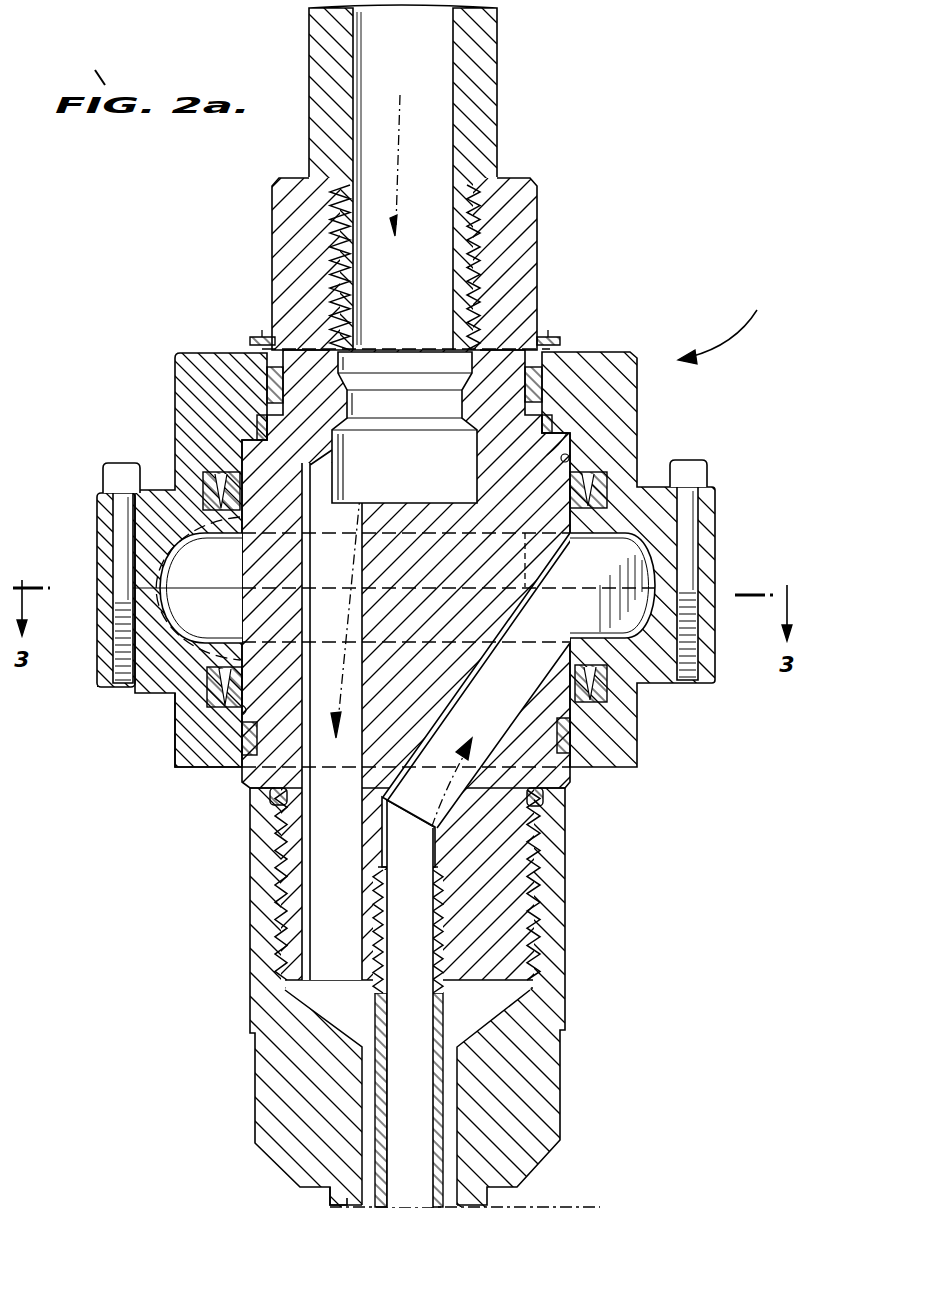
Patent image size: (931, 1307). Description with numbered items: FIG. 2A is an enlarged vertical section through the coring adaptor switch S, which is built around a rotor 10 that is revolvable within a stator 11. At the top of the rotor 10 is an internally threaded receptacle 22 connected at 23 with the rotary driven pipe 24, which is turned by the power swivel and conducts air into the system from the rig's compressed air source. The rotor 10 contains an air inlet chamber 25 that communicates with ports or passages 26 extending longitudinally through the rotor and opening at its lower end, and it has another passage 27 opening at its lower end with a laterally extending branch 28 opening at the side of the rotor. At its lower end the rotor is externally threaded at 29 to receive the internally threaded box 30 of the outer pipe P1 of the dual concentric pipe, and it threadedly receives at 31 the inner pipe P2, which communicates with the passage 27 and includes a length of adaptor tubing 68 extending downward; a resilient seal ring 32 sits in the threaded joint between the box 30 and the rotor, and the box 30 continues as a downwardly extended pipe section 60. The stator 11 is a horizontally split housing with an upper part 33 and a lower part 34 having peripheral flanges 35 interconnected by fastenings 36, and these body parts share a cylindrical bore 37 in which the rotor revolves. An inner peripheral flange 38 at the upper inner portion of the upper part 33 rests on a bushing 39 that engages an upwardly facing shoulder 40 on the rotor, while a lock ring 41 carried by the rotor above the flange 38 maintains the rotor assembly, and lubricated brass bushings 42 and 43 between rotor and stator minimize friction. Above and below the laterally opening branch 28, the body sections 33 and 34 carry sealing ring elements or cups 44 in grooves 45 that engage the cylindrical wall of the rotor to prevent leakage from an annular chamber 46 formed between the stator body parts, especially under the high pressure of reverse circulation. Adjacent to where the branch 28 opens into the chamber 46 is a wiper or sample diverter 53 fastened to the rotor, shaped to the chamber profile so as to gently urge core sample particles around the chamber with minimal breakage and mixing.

The rotor 10 is at (530, 230).
The stator 11 is at (620, 355).
The internally threaded receptacle 22 is at (275, 215).
The threaded connection 23 is at (333, 263).
The rotary driven pipe 24 is at (485, 48).
The air inlet chamber 25 is at (404, 427).
The ports or passages 26 is at (330, 812).
The passage 27 is at (428, 848).
The laterally extending branch 28 is at (489, 700).
The external threads 29 is at (540, 900).
The internally threaded box 30 is at (550, 850).
The threaded connection 31 is at (437, 905).
The resilient seal ring 32 is at (275, 800).
The upper part 33 is at (175, 380).
The lower part 34 is at (185, 742).
The peripheral flanges 35 is at (100, 570).
The fastenings 36 is at (118, 500).
The cylindrical bore 37 is at (565, 450).
The inner peripheral flange 38 is at (567, 360).
The bushing 39 is at (545, 438).
The upwardly facing shoulder 40 is at (250, 442).
The lock ring 41 is at (260, 338).
The lubricated brass bushing 42 is at (275, 385).
The lubricated brass bushing 43 is at (245, 742).
The sealing ring elements or cups 44 is at (575, 490).
The grooves 45 is at (207, 478).
The annular chamber 46 is at (180, 610).
The wiper or sample diverter 53 is at (585, 570).
The downwardly extended pipe section 60 is at (347, 1205).
The adaptor tubing 68 is at (376, 1082).
The outer pipe P1 is at (487, 1203).
The inner pipe P2 is at (443, 1090).
The coring adaptor switch S is at (718, 323).